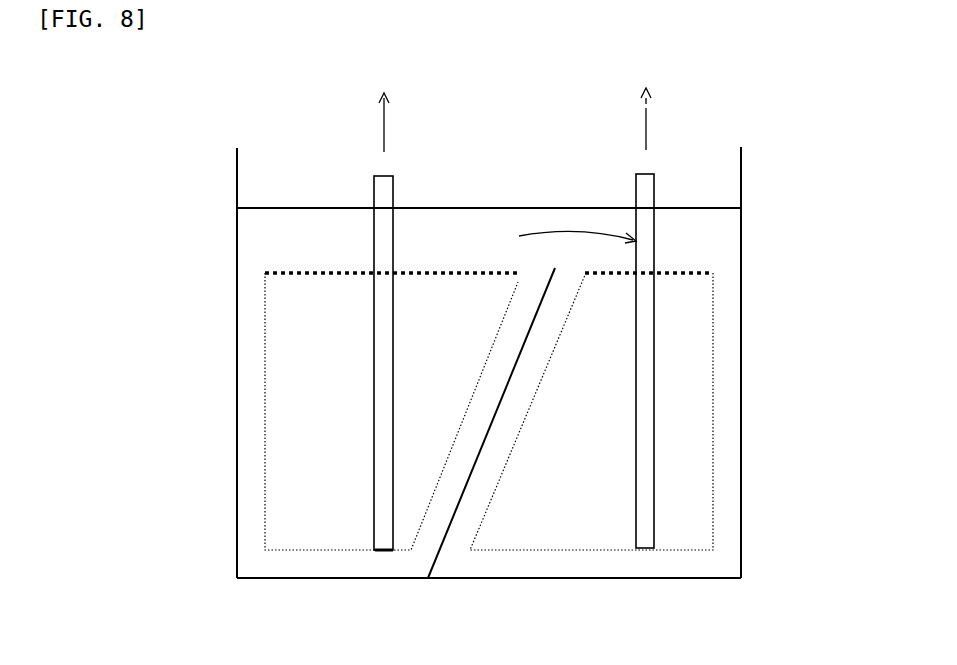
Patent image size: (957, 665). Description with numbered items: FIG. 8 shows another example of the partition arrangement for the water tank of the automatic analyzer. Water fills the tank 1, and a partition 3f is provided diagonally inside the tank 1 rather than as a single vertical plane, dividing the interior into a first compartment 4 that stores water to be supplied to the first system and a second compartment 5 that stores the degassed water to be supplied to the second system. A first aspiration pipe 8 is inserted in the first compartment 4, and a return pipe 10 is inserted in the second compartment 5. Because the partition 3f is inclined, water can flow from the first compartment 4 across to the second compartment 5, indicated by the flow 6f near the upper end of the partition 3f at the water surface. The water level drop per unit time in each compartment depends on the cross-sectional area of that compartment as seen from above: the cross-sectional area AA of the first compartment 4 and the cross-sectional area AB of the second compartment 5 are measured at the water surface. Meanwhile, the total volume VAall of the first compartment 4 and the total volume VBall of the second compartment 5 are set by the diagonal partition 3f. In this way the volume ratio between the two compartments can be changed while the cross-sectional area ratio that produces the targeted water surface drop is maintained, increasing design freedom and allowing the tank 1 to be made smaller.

The tank 1 is at (237, 325).
The partition 3f is at (455, 516).
The first compartment 4 is at (278, 562).
The second compartment 5 is at (697, 561).
The gap flow between diaphragm and liquid surface 6f is at (563, 252).
The first aspiration pipe 8 is at (380, 345).
The return pipe 10 is at (655, 331).
The cross-sectional area of the first compartment AA is at (350, 272).
The cross-sectional area of the second compartment AB is at (680, 266).
The total volume of anode chamber VAall is at (285, 393).
The total volume of cathode chamber VBall is at (687, 393).